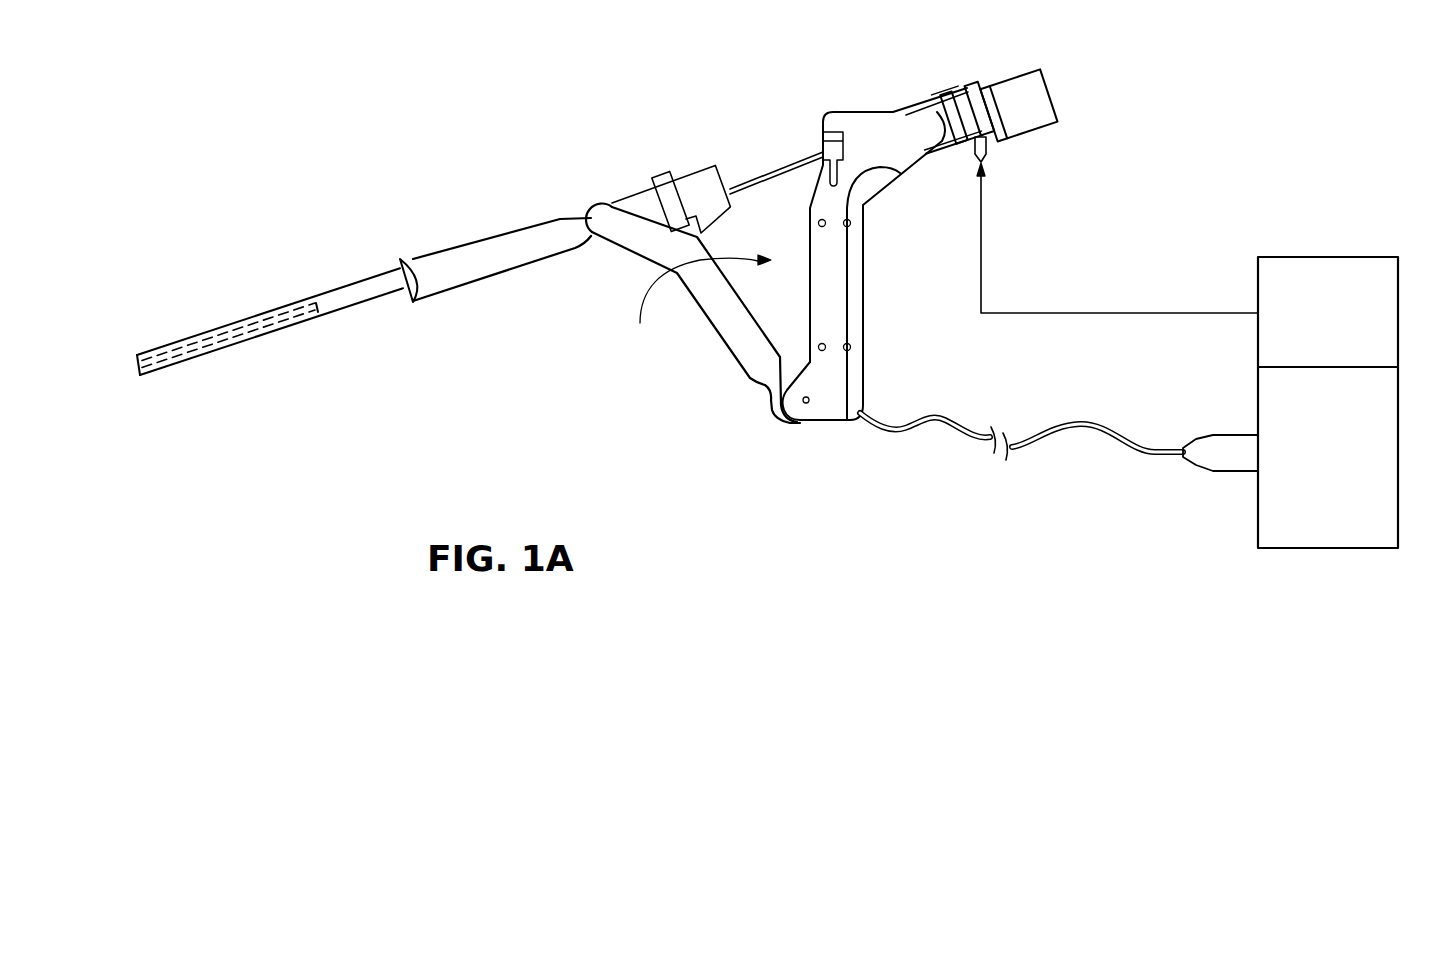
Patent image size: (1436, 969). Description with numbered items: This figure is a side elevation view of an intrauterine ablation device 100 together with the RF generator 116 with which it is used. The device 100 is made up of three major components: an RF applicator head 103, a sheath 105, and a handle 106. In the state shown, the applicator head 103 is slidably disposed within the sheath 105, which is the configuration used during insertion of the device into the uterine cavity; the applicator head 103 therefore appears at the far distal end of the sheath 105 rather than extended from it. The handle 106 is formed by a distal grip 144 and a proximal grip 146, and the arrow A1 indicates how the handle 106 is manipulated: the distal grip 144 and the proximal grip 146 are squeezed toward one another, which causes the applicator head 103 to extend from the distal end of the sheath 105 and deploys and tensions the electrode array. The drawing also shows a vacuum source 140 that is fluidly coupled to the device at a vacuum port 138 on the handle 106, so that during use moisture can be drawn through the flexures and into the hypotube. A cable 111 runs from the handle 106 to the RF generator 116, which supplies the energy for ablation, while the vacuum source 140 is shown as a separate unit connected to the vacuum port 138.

The intrauterine ablation device 100 is at (410, 132).
The RF applicator head 103 is at (177, 345).
The sheath 105 is at (343, 288).
The handle 106 is at (915, 76).
The electrical cable 111 is at (940, 417).
The RF generator 116 is at (1331, 548).
The vacuum port 138 is at (988, 148).
The vacuum source 140 is at (1341, 257).
The distal grip 144 is at (727, 327).
The proximal grip 146 is at (862, 237).
The arrow A1 is at (667, 290).